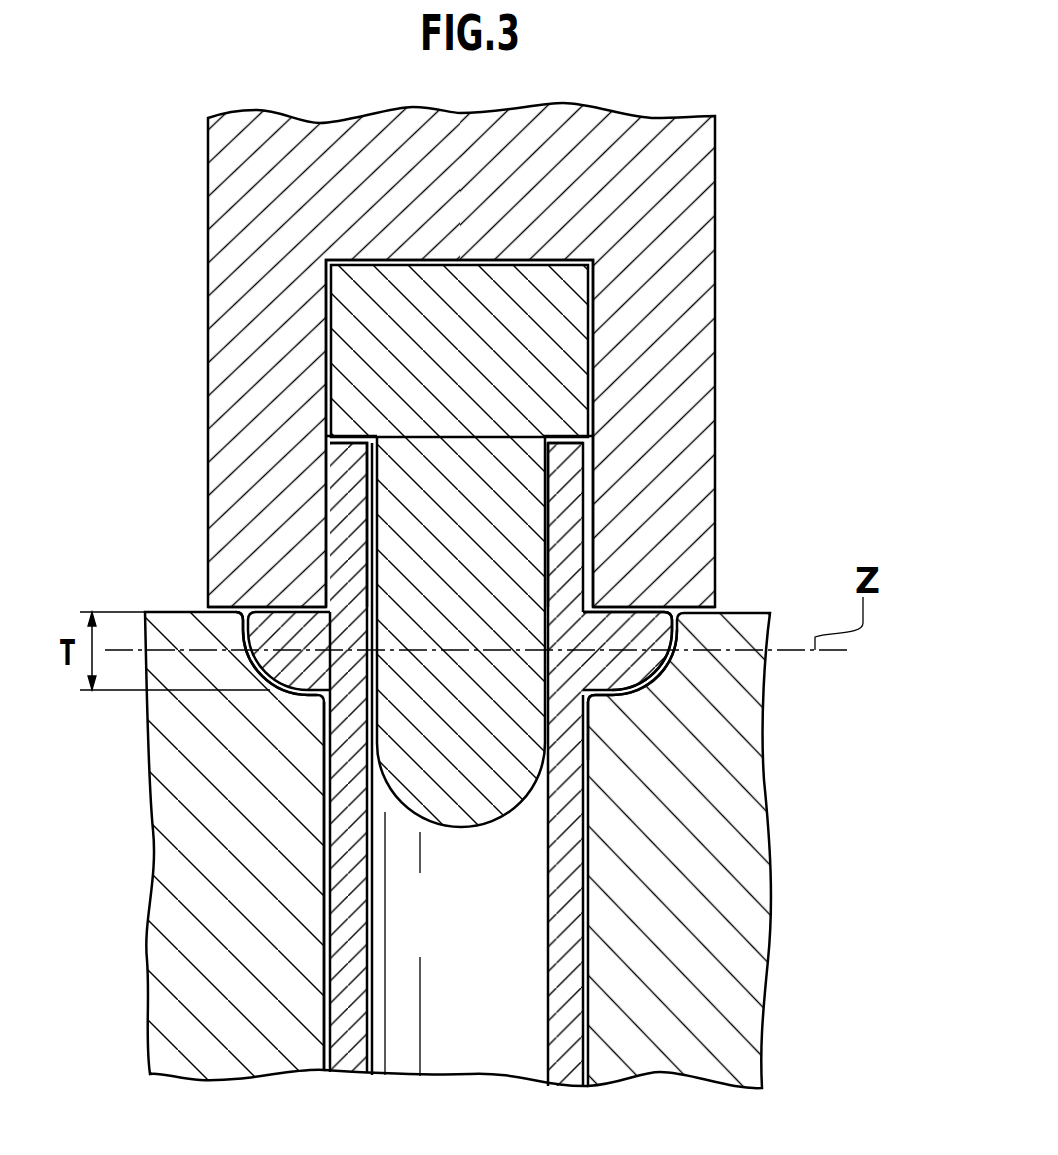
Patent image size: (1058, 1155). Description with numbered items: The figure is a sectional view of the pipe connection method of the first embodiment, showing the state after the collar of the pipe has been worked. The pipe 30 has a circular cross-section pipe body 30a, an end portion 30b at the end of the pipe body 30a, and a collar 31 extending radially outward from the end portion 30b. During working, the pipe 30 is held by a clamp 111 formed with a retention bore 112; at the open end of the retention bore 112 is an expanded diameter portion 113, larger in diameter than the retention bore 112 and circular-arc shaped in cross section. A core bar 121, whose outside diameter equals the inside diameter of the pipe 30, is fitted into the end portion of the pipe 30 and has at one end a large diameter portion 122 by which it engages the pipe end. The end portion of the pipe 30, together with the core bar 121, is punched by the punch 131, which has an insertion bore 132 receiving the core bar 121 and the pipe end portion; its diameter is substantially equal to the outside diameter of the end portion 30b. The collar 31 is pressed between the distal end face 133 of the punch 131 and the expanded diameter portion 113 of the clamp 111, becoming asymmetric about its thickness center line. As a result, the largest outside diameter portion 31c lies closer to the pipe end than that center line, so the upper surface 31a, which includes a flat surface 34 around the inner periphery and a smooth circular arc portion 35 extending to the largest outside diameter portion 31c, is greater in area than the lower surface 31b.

The pipe 30 is at (343, 882).
The pipe body 30a is at (348, 918).
The end portion 30b is at (345, 472).
The collar 31 is at (305, 627).
The upper surface of the collar 31a is at (866, 672).
The lower surface of the collar 31b is at (623, 607).
The largest outside diameter portion 31c is at (672, 614).
The flat surface 34 is at (637, 723).
The circular arc portion 35 is at (677, 677).
The clamp 111 is at (172, 1042).
The retention bore 112 is at (322, 943).
The expanded diameter portion 113 is at (283, 688).
The core bar 121 is at (400, 518).
The large diameter portion 122 is at (375, 355).
The punch 131 is at (253, 300).
The insertion bore 132 is at (593, 360).
The distal end face of the punch 133 is at (263, 605).